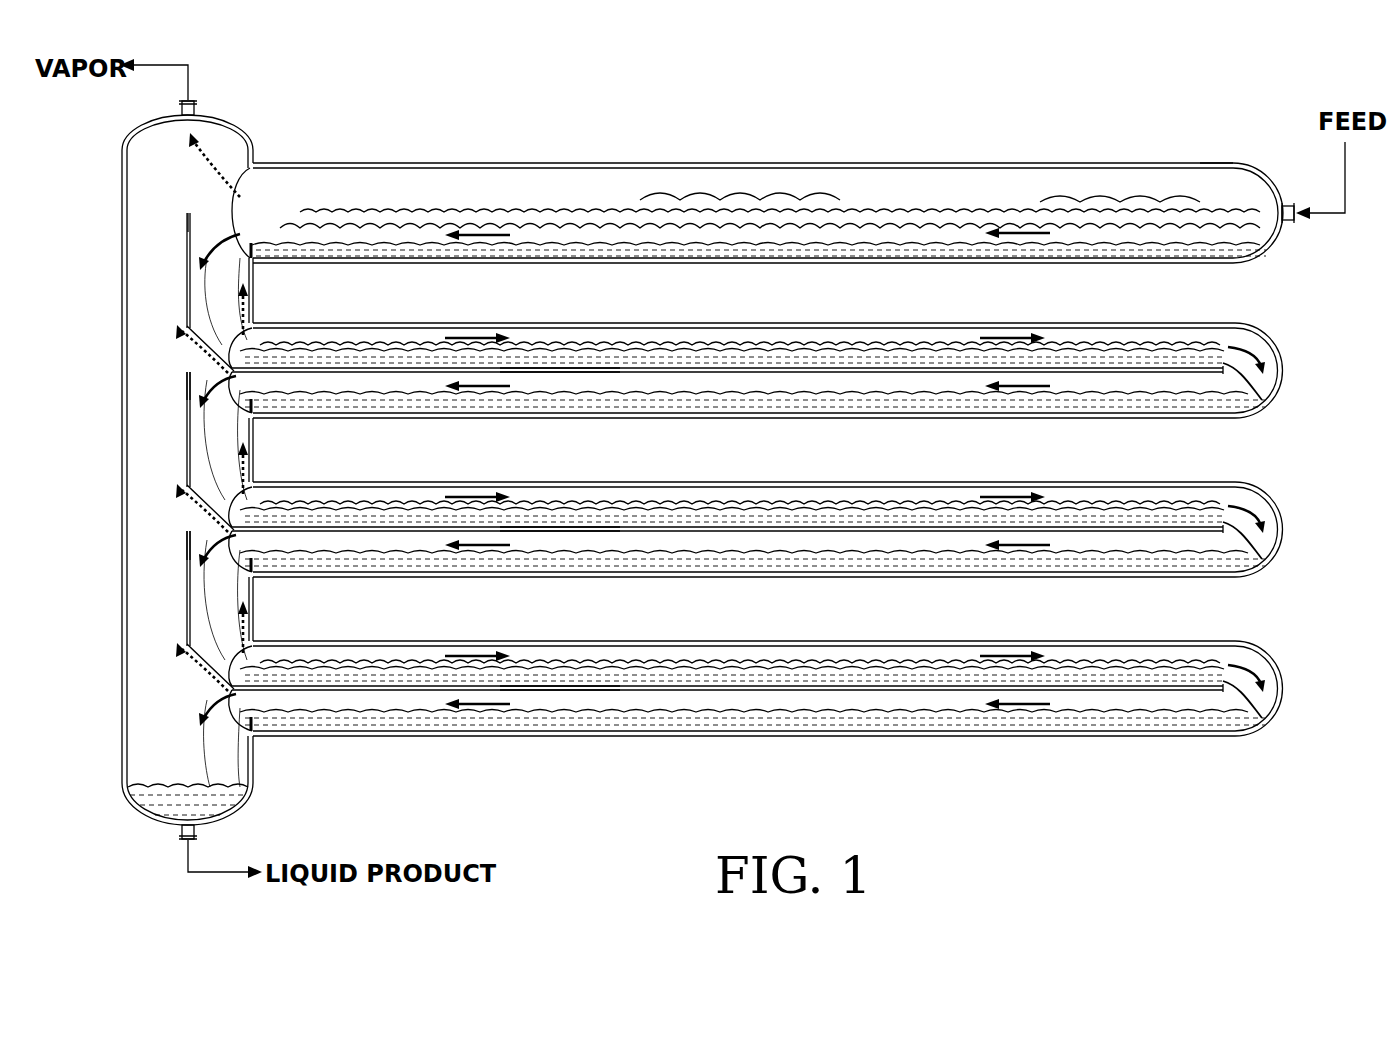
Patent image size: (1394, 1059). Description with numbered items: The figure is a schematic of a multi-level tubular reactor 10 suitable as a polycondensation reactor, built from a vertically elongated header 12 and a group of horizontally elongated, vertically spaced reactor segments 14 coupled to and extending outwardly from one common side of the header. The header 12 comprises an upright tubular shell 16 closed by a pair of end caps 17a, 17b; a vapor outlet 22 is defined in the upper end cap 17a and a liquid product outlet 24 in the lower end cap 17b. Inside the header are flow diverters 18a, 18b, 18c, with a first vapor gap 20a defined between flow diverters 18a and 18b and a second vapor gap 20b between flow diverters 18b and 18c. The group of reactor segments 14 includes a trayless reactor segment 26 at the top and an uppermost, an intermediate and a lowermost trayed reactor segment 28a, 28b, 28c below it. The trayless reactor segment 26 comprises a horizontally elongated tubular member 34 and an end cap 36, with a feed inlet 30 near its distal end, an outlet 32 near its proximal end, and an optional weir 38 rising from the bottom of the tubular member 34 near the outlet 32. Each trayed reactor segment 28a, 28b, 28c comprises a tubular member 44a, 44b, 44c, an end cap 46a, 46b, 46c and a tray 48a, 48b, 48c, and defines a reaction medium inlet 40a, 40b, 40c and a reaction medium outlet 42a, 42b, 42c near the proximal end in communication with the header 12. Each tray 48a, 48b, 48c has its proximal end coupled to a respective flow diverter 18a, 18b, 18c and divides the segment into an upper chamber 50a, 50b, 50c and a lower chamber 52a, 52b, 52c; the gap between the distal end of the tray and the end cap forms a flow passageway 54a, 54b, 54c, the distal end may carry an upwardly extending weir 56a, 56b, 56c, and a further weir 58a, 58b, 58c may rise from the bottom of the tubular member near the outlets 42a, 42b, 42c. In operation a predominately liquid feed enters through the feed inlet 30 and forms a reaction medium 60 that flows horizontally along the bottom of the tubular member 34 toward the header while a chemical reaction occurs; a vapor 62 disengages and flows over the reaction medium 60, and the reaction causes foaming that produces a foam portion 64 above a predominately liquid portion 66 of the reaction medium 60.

The multi-level tubular reactor 10 is at (345, 100).
The header 12 is at (226, 114).
The group of reactor segments 14 is at (880, 100).
The tubular shell 16 is at (122, 205).
The upper end cap 17a is at (138, 128).
The lower end cap 17b is at (132, 808).
The flow diverter 18a is at (187, 288).
The flow diverter 18b is at (187, 450).
The flow diverter 18c is at (187, 607).
The first vapor gap 20a is at (187, 369).
The second vapor gap 20b is at (187, 528).
The vapor outlet 22 is at (180, 107).
The liquid product outlet 24 is at (180, 835).
The trayless reactor segment 26 is at (976, 163).
The uppermost trayed reactor segment 28a is at (978, 323).
The intermediate trayed reactor segment 28b is at (978, 482).
The lowermost trayed reactor segment 28c is at (978, 641).
The feed inlet 30 is at (1286, 224).
The outlet 32 is at (250, 200).
The tubular member 34 is at (1214, 163).
The end cap 36 is at (1280, 190).
The weir 38 is at (258, 252).
The reaction medium inlet 40a is at (257, 340).
The reaction medium inlet 40b is at (257, 500).
The reaction medium inlet 40c is at (257, 660).
The reaction medium outlet 42a is at (232, 383).
The reaction medium outlet 42b is at (232, 542).
The reaction medium outlet 42c is at (232, 701).
The tubular member 44a is at (1214, 323).
The tubular member 44b is at (1214, 482).
The tubular member 44c is at (1214, 641).
The end cap 46a is at (1281, 360).
The end cap 46b is at (1281, 519).
The end cap 46c is at (1281, 678).
The tray 48a is at (556, 372).
The tray 48b is at (556, 531).
The tray 48c is at (556, 690).
The upper chamber 50a is at (806, 330).
The upper chamber 50b is at (806, 500).
The upper chamber 50c is at (806, 660).
The lower chamber 52a is at (806, 388).
The lower chamber 52b is at (806, 548).
The lower chamber 52c is at (806, 707).
The flow passageway 54a is at (1265, 358).
The flow passageway 54b is at (1265, 517).
The flow passageway 54c is at (1265, 677).
The weir 56a is at (1202, 360).
The weir 56b is at (1202, 519).
The weir 56c is at (1202, 678).
The weir 58a is at (258, 408).
The weir 58b is at (258, 567).
The weir 58c is at (258, 726).
The reaction medium 60 is at (806, 190).
The vapor 62 is at (322, 185).
The foam portion 64 is at (556, 212).
The predominately liquid portion 66 is at (500, 260).